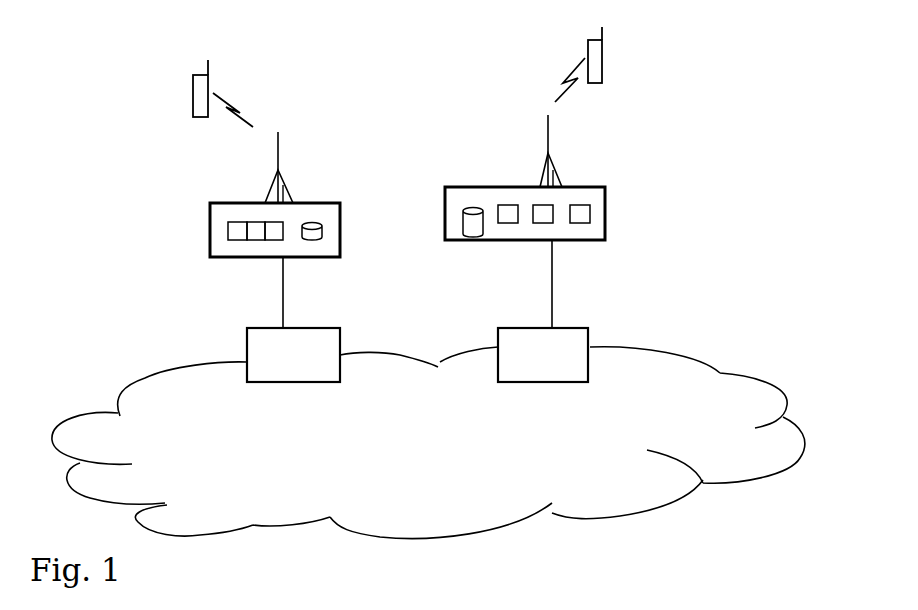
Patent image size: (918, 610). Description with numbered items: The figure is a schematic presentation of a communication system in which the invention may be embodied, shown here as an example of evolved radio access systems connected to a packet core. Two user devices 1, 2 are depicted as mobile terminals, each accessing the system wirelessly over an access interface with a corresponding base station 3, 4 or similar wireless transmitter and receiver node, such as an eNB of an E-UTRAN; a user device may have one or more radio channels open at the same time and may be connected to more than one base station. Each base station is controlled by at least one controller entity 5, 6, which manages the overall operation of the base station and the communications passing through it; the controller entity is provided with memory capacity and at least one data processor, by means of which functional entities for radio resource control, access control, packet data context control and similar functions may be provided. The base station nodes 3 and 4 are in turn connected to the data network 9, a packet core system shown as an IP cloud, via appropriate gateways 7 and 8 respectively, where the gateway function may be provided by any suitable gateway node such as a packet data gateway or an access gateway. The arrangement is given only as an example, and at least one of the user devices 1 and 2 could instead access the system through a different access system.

The user device 1 is at (193, 92).
The user device 2 is at (602, 53).
The base station 3 is at (278, 170).
The base station 4 is at (550, 153).
The controller entity 5 is at (210, 222).
The controller entity 6 is at (607, 212).
The gateway 7 is at (247, 345).
The gateway 8 is at (590, 348).
The data network 9 is at (118, 400).